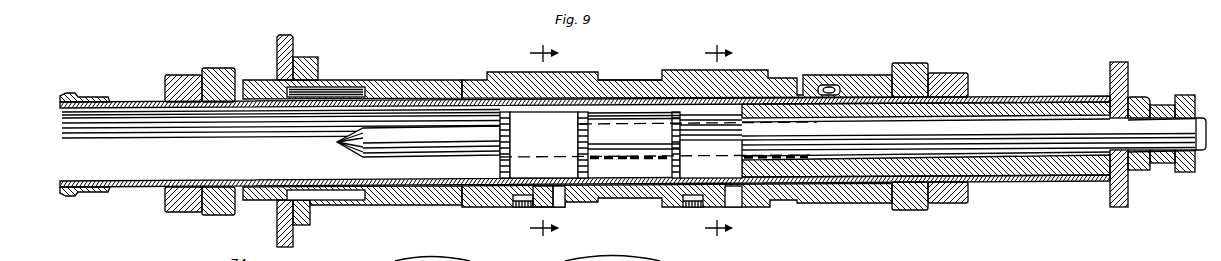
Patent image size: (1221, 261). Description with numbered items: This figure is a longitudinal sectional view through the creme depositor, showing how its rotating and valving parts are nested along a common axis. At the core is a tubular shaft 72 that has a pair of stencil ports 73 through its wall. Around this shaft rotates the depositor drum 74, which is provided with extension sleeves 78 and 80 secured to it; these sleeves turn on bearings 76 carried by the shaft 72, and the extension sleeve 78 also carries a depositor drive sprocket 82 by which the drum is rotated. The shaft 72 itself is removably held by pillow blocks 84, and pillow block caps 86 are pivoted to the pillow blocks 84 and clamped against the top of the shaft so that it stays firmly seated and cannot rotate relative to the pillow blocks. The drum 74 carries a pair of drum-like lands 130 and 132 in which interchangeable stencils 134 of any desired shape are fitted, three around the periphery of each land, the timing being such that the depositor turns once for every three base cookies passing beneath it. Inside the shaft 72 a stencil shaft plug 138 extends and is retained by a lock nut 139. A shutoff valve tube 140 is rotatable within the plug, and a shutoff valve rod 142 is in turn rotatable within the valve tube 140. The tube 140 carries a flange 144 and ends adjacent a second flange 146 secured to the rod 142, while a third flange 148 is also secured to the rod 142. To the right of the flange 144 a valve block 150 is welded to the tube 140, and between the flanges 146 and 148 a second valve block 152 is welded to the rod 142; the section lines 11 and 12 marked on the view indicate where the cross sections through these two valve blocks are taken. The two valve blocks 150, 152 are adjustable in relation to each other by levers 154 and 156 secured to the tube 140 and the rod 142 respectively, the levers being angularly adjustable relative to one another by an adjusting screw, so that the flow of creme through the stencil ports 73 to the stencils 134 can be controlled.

The section line 11— 11 is at (718, 140).
The section line 12— 12 is at (544, 141).
The tubular shaft 72 is at (146, 101).
The stencil ports 73 is at (559, 196).
The depositor drum 74 is at (617, 78).
The bearings 76 is at (219, 68).
The extension sleeve 78 is at (348, 80).
The extension sleeve 80 is at (833, 78).
The depositor drive sprocket 82 is at (294, 237).
The pillow blocks 84 is at (173, 208).
The pillow block caps 86 is at (186, 75).
The drum-like land 130 is at (772, 210).
The drum-like land 132 is at (590, 207).
The stencils 134 is at (533, 207).
The stencil shaft plug 138 is at (1030, 103).
The lock nut 139 is at (1118, 62).
The shutoff valve tube 140 is at (853, 120).
The shutoff valve rod 142 is at (358, 156).
The flange 144 is at (672, 171).
The second flange 146 is at (588, 171).
The third flange 148 is at (500, 172).
The valve block 150 is at (727, 160).
The second valve block 152 is at (543, 166).
The lever 154 is at (1138, 97).
The lever 156 is at (1184, 95).